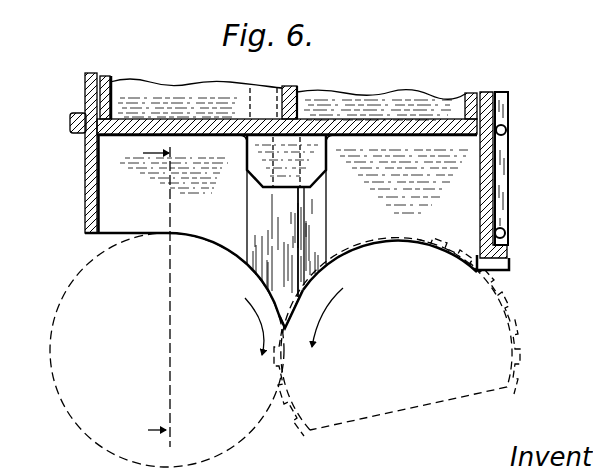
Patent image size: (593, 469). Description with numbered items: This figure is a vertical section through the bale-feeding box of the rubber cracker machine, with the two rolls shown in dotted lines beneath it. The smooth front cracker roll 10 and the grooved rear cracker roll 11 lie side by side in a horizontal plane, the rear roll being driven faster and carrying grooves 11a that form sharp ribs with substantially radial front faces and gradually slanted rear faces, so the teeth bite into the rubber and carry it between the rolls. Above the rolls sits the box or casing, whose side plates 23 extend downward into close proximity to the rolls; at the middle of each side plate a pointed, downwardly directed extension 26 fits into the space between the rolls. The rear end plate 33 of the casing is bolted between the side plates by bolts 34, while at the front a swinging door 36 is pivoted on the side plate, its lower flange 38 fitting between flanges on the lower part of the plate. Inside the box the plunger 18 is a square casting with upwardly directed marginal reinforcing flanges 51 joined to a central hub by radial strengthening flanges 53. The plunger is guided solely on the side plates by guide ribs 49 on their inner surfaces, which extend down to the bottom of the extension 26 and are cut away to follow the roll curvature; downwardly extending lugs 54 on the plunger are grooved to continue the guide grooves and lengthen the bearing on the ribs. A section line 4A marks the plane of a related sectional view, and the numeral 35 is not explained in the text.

The front cracker roll 10 is at (167, 350).
The rear cracker roll 11 is at (396, 334).
The grooves 11a is at (502, 302).
The plunger 18 is at (387, 105).
The side plates 23 is at (174, 191).
The downwardly directed extension 26 is at (262, 265).
The rear end plate 33 is at (490, 167).
The bolts 34 is at (507, 128).
The side wall 35 is at (498, 205).
The swinging doors 36 is at (84, 200).
The lower flange 38 is at (72, 123).
The guide ribs 49 is at (285, 298).
The reinforcing flanges 51 is at (113, 101).
The radial strengthening flanges 53 is at (298, 108).
The lugs 54 is at (315, 160).
The section line 4A— 4A is at (145, 293).